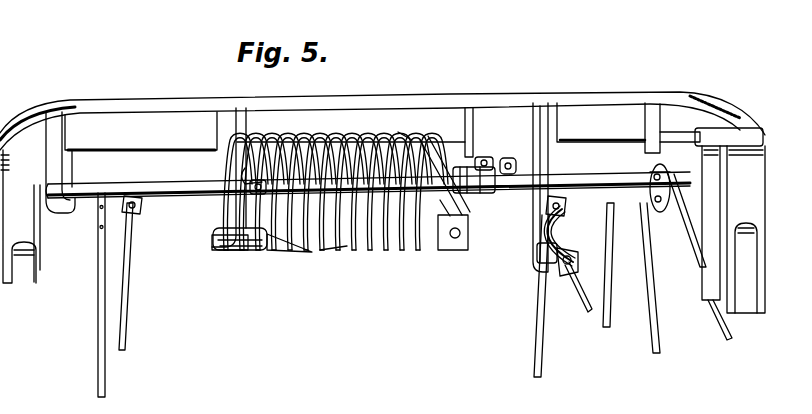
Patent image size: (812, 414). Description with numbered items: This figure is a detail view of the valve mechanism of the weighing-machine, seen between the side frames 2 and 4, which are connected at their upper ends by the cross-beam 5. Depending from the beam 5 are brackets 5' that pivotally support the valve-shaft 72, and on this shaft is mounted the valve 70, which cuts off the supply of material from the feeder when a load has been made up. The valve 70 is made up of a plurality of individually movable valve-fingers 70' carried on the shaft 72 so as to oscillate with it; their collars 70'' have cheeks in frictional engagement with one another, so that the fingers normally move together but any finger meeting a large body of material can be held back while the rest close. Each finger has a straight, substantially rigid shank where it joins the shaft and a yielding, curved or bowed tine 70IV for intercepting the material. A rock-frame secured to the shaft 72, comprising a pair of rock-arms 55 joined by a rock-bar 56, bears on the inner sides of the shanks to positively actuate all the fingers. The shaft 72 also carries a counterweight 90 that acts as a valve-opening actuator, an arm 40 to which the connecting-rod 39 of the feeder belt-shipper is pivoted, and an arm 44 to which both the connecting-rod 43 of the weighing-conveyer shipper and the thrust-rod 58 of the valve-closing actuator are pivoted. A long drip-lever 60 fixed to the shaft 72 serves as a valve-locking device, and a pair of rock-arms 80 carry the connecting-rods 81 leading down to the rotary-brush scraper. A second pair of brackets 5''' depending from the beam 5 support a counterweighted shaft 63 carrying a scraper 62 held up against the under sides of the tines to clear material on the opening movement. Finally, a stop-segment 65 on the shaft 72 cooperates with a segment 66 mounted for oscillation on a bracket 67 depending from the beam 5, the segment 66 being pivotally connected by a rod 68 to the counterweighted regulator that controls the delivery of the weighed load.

The cross-beam 5 is at (382, 113).
The brackets 5' is at (411, 137).
The brackets 5''' is at (319, 192).
The side frame 2 is at (38, 267).
The valve-shaft 72 is at (147, 185).
The valve 70 is at (335, 179).
The valve-fingers 70' is at (224, 153).
The collars 70'' is at (471, 222).
The tines 70IV is at (347, 247).
The rock-arms 55 is at (256, 188).
The rock-bar 56 is at (465, 194).
The arm 40 is at (508, 158).
The rock-arms 80 is at (140, 213).
The shaft 63 is at (237, 250).
The scraper 62 is at (282, 252).
The drip-lever 60 is at (98, 317).
The connecting-rods 81 is at (125, 329).
The bracket 67 is at (537, 235).
The stop-segment 65 is at (572, 240).
The segment 66 is at (567, 274).
The connecting-rod 39 is at (586, 312).
The rod 68 is at (535, 356).
The thrust-rod 58 is at (652, 339).
The counterweight 90 is at (664, 212).
The arm 44 is at (667, 193).
The side frame 4 is at (760, 283).
The connecting-rod 43 is at (722, 332).